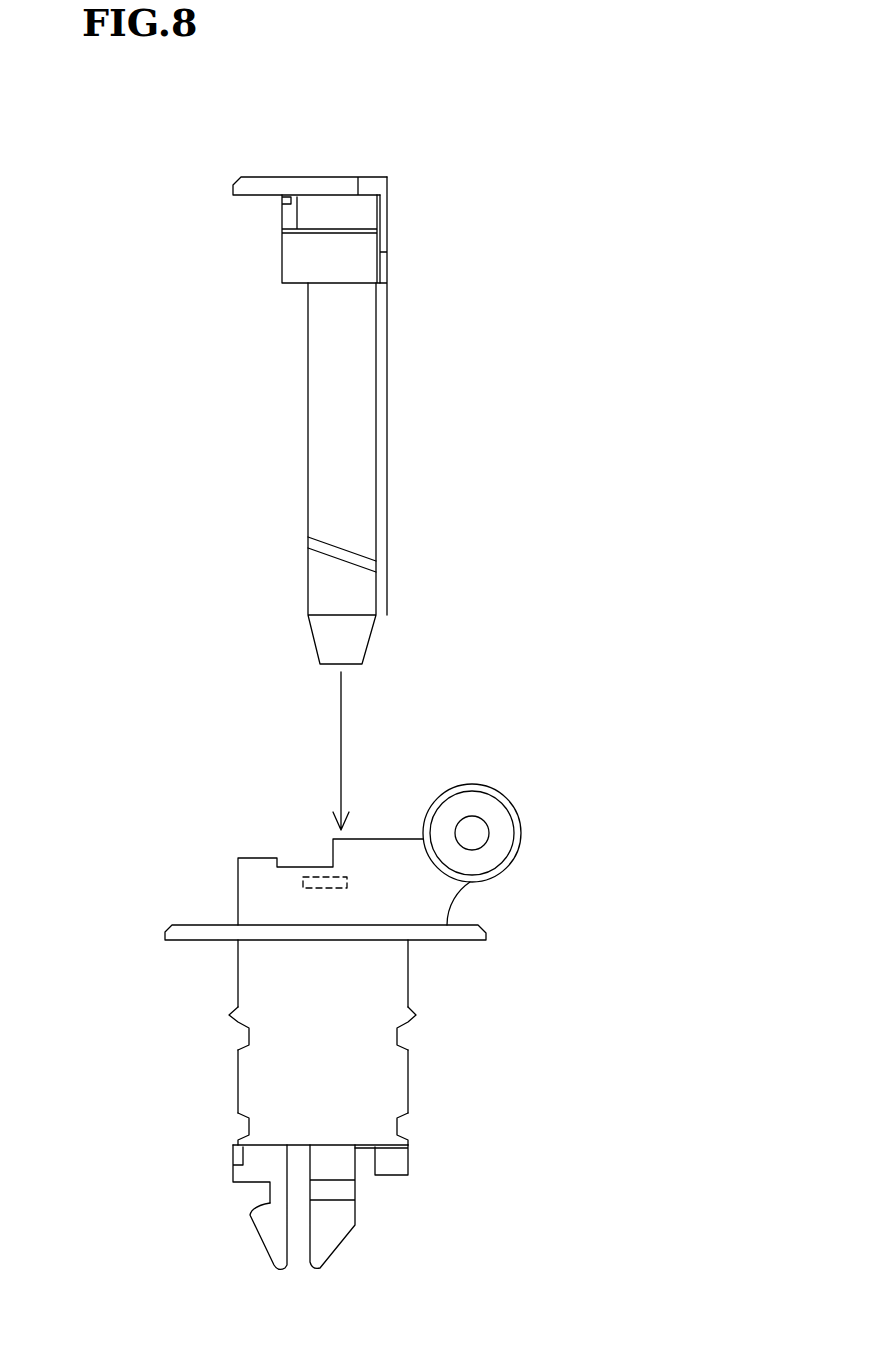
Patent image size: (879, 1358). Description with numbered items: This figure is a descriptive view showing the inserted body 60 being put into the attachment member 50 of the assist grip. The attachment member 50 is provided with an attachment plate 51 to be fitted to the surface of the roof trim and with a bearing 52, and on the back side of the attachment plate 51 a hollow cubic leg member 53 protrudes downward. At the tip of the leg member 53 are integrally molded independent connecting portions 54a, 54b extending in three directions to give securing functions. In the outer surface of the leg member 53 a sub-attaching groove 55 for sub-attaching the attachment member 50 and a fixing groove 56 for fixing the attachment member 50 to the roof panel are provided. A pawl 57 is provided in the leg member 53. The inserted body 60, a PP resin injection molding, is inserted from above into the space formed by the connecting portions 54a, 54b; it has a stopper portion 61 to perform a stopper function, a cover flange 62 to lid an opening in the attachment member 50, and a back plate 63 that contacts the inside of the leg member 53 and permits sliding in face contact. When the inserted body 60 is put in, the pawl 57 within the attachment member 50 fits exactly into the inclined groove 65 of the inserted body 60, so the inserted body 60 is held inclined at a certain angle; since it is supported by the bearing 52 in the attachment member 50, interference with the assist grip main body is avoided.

The attachment member 50 is at (309, 1038).
The attachment plate 51 is at (187, 928).
The bearing 52 is at (502, 843).
The leg member 53 is at (317, 1042).
The connecting portion 54a is at (268, 1227).
The connecting portion 54b is at (340, 1230).
The sub-attaching groove 55 is at (412, 1118).
The fixing groove 56 is at (411, 1030).
The pawl 57 is at (300, 862).
The inserted body 60 is at (382, 461).
The stopper portion 61 is at (320, 424).
The cover flange 62 is at (265, 183).
The back plate 63 is at (387, 383).
The inclined groove 65 is at (330, 557).